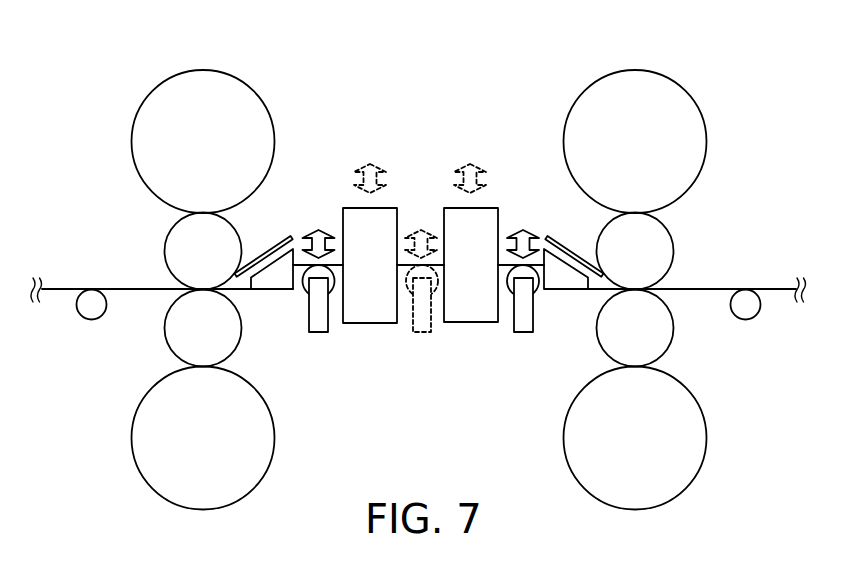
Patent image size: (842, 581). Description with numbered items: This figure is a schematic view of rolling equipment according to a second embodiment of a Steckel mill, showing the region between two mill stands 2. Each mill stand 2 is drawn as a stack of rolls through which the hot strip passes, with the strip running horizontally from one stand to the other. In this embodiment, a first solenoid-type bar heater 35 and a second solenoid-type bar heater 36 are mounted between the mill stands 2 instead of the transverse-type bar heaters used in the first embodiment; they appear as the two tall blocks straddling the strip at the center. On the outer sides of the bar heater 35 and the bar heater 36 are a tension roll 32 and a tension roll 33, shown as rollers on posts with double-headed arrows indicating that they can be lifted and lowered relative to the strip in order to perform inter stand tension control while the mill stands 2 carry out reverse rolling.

The mill stand 2 is at (249, 78).
The tension roll 32 is at (319, 317).
The tension roll 33 is at (523, 317).
The solenoid-type bar heater 35 is at (393, 205).
The solenoid-type bar heater 36 is at (494, 204).